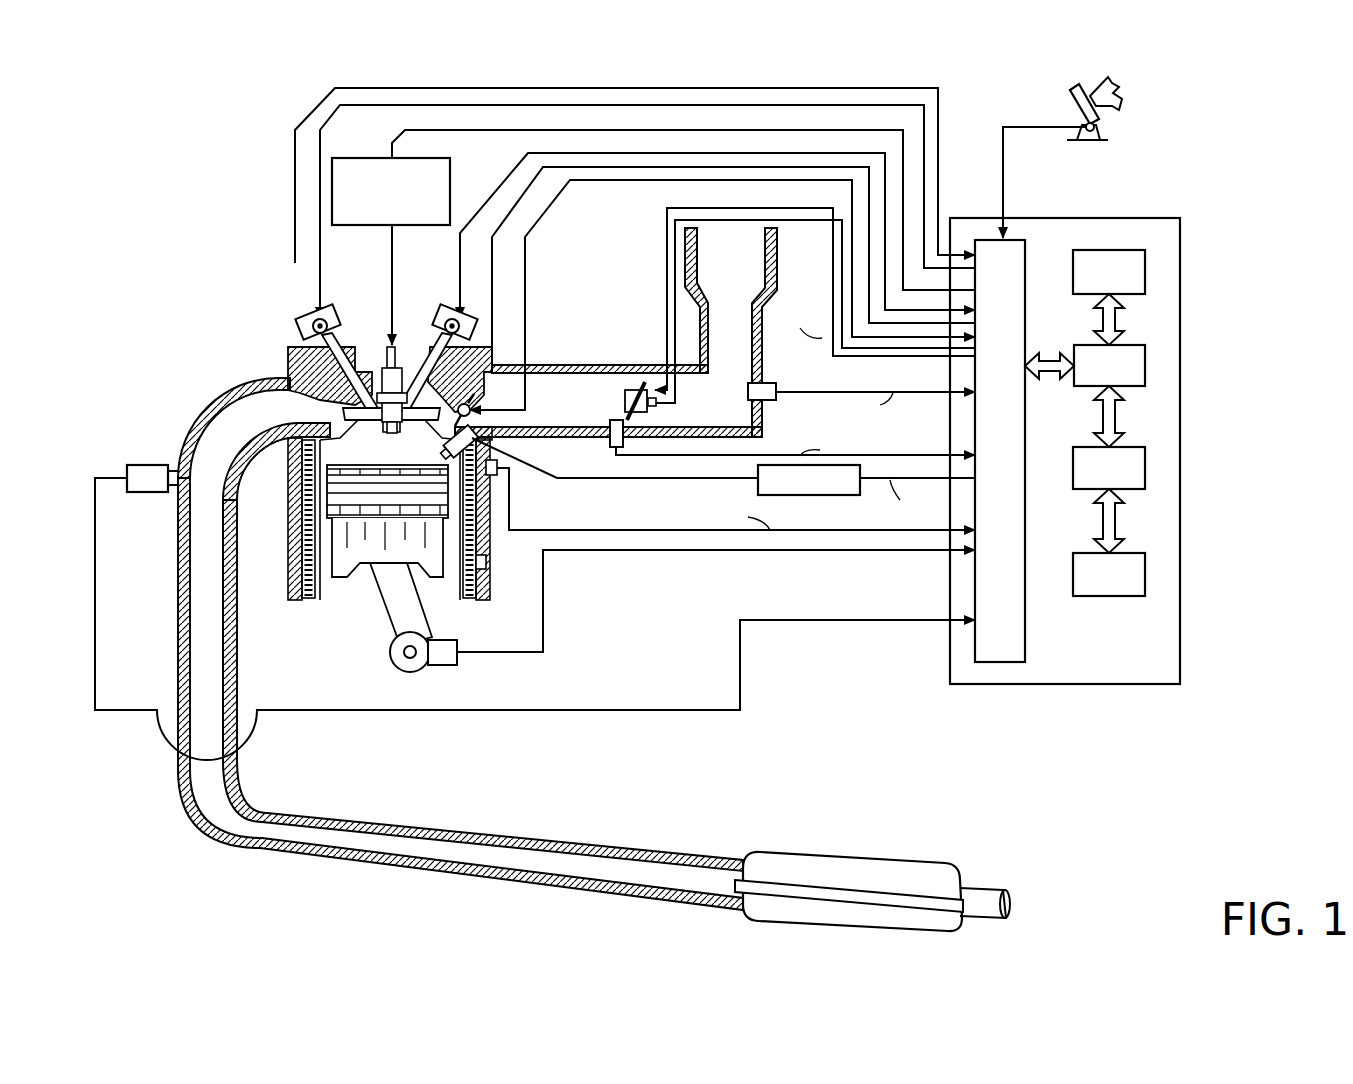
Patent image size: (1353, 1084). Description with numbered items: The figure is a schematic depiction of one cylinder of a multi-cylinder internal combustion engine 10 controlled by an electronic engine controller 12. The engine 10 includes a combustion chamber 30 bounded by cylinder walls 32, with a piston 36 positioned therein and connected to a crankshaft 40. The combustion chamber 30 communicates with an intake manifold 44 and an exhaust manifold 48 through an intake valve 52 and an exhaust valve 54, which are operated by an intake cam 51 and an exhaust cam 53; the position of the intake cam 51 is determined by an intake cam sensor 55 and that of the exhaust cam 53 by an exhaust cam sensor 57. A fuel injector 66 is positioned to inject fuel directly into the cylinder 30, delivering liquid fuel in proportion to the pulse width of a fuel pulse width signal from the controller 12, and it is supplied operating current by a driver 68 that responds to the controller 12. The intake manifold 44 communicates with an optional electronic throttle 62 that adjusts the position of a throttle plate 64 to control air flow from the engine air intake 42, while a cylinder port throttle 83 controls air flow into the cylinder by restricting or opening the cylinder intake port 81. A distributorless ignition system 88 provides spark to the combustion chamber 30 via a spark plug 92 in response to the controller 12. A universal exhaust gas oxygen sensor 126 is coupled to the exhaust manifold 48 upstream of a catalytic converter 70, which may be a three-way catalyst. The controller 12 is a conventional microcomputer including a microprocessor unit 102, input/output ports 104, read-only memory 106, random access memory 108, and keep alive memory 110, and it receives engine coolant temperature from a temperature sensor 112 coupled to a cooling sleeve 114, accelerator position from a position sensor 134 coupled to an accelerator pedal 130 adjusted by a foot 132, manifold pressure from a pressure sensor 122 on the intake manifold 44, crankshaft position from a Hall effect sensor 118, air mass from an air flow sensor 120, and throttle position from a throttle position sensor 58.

The internal combustion engine 10 is at (228, 302).
The electronic engine controller 12 is at (1170, 218).
The combustion chamber 30 is at (387, 448).
The cylinder walls 32 is at (327, 585).
The piston 36 is at (373, 548).
The crankshaft 40 is at (401, 672).
The engine air intake 42 is at (716, 276).
The intake manifold 44 is at (585, 411).
The exhaust manifold 48 is at (242, 422).
The intake cam 51 is at (446, 313).
The intake valve 52 is at (402, 396).
The exhaust cam 53 is at (330, 315).
The exhaust valve 54 is at (322, 397).
The intake cam sensor 55 is at (468, 330).
The exhaust cam sensor 57 is at (306, 328).
The throttle position sensor 58 is at (654, 404).
The electronic throttle 62 is at (625, 384).
The throttle plate 64 is at (642, 380).
The fuel injector 66 is at (541, 470).
The driver 68 is at (855, 496).
The catalytic converter 70 is at (755, 922).
The cylinder intake port 81 is at (448, 428).
The cylinder port throttle 83 is at (472, 405).
The distributorless ignition system 88 is at (347, 158).
The spark plug 92 is at (384, 374).
The microprocessor unit 102 is at (1145, 368).
The input/output ports 104 is at (1025, 250).
The read-only memory 106 is at (1145, 272).
The random access memory 108 is at (1145, 470).
The keep alive memory 110 is at (1145, 578).
The temperature sensor 112 is at (497, 490).
The cooling sleeve 114 is at (480, 565).
The Hall effect sensor 118 is at (440, 666).
The air mass sensor 120 is at (772, 388).
The pressure sensor 122 is at (612, 448).
The Universal Exhaust Gas Oxygen sensor 126 is at (127, 470).
The accelerator pedal 130 is at (1075, 100).
The foot 132 is at (1117, 92).
The position sensor 134 is at (1100, 128).